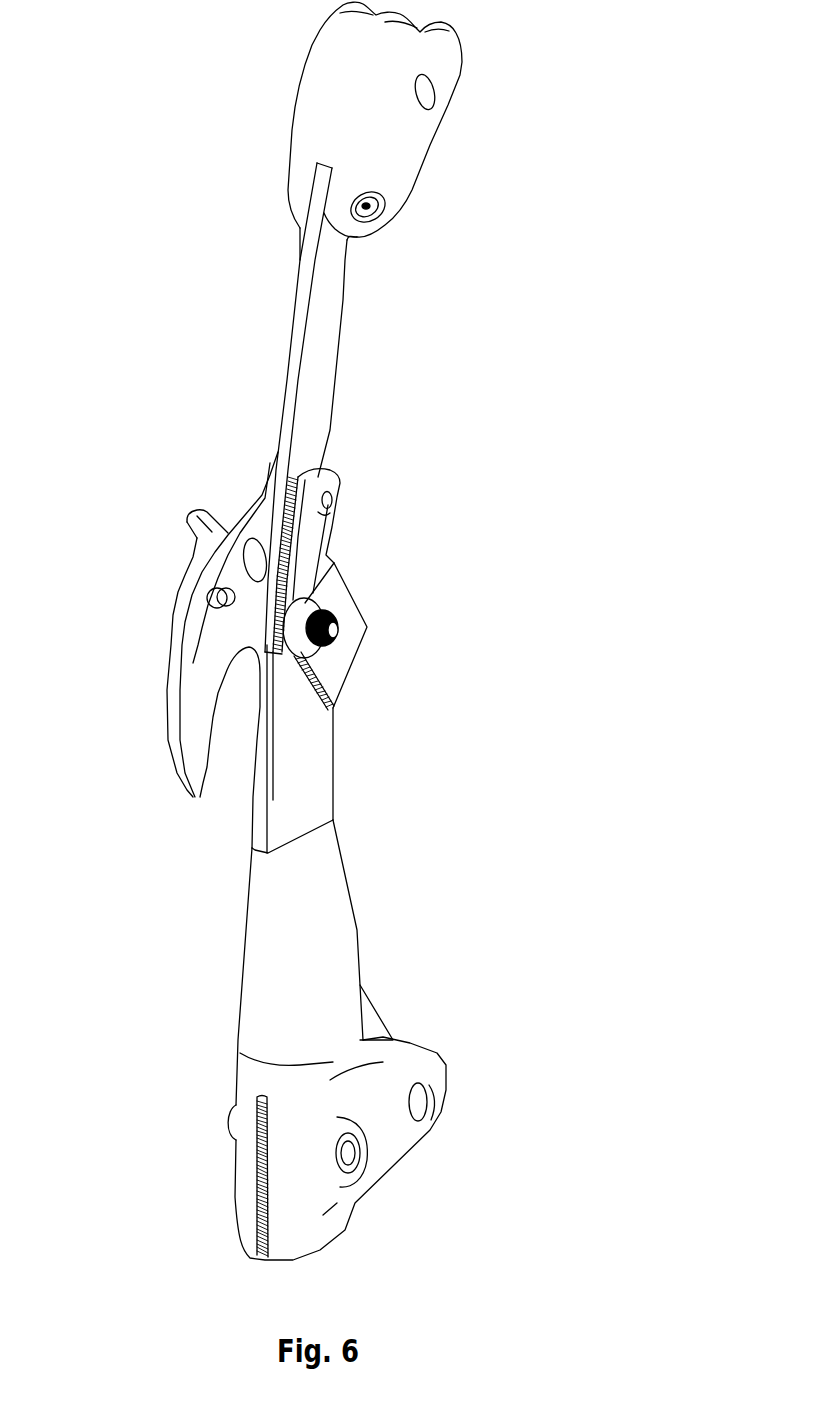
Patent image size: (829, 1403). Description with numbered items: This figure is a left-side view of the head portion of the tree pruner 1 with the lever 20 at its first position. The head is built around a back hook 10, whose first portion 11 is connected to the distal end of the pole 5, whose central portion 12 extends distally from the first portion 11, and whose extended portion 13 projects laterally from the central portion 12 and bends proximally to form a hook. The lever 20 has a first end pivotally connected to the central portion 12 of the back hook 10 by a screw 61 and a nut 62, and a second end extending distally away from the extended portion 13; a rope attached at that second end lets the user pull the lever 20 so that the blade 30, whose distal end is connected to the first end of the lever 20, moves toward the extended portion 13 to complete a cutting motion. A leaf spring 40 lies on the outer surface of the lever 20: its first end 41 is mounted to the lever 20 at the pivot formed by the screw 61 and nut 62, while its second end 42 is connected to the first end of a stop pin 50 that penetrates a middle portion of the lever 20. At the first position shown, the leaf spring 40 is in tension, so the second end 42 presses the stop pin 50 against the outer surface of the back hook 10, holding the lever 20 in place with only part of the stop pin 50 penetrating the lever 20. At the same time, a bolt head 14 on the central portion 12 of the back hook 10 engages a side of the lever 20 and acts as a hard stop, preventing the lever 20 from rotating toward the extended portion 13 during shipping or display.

The tree pruner 1 is at (197, 218).
The lever 20 is at (348, 346).
The stop pin 50 is at (308, 472).
The bolt head 14 is at (261, 542).
The second end of the leaf spring 42 is at (333, 497).
The leaf spring 40 is at (315, 551).
The screw 61 is at (340, 628).
The back hook 10 is at (160, 651).
The first end of the leaf spring 41 is at (278, 622).
The nut 62 is at (295, 632).
The blade 30 is at (330, 683).
The extended portion 13 is at (195, 743).
The central portion 12 is at (257, 707).
The first portion 11 is at (302, 774).
The pole 5 is at (328, 930).